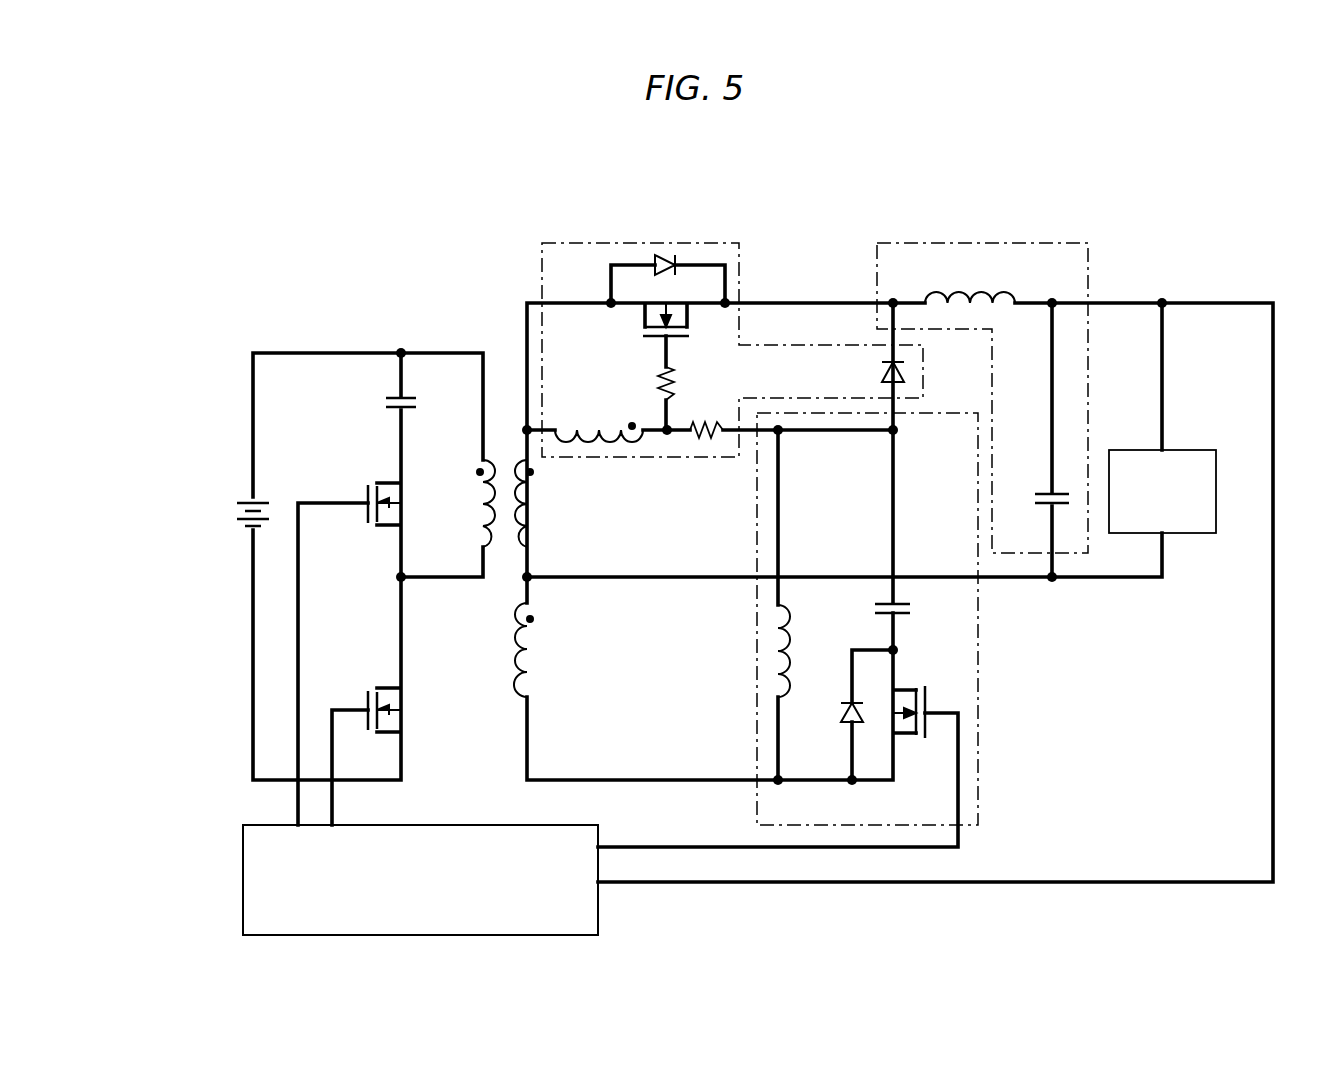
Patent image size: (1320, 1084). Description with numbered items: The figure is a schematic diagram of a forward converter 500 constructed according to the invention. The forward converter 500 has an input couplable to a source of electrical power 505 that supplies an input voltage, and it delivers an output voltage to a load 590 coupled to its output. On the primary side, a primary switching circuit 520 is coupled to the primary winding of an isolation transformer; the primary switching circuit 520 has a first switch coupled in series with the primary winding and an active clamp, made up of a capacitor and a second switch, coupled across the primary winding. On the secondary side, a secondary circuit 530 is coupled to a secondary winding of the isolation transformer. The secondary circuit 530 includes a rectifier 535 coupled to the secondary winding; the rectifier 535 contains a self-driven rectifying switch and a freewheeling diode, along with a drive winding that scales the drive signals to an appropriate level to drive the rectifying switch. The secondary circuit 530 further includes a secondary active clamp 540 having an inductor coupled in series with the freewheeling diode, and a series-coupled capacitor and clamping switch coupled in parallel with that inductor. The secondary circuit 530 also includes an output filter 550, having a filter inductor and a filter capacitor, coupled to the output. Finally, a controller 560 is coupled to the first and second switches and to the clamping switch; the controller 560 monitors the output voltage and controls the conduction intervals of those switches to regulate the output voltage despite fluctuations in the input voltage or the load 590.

The forward converter 500 is at (448, 229).
The source of electrical power 505 is at (238, 511).
The primary switching circuit 520 is at (483, 306).
The secondary circuit 530 is at (1093, 228).
The rectifier 535 is at (732, 350).
The secondary active clamp 540 is at (867, 619).
The output filter 550 is at (982, 398).
The controller 560 is at (420, 880).
The load 590 is at (1162, 491).